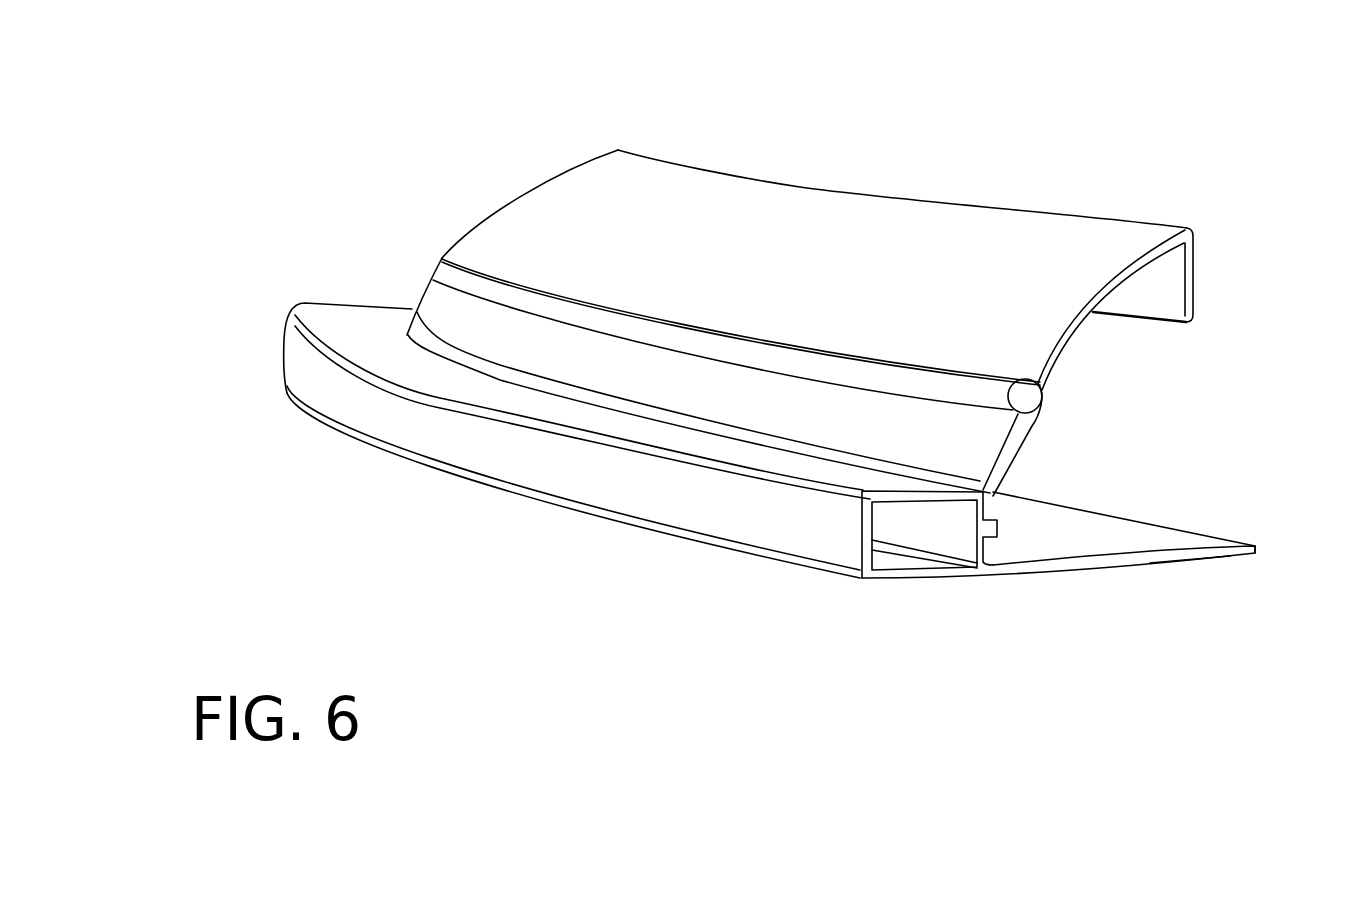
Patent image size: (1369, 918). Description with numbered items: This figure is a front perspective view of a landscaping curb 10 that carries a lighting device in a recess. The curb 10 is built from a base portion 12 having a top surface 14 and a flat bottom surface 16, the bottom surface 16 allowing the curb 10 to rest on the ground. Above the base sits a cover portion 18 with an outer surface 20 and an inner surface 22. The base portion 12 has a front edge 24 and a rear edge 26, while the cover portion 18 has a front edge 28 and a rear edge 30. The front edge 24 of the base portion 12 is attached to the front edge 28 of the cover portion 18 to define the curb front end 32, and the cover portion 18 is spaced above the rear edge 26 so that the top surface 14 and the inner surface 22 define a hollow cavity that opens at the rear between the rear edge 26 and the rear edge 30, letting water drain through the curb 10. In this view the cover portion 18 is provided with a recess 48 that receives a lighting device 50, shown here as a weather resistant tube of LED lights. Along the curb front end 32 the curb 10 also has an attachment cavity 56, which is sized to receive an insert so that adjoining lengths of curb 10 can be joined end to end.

The curb 10 is at (305, 220).
The base portion 12 is at (1123, 533).
The top surface 14 is at (1053, 537).
The bottom surface 16 is at (1183, 560).
The cover portion 18 is at (1022, 258).
The outer surface 20 is at (903, 222).
The inner surface 22 is at (1152, 295).
The front edge 24 is at (880, 578).
The rear edge 26 is at (1217, 530).
The front edge 28 is at (713, 522).
The rear edge 30 is at (1172, 302).
The curb front end 32 is at (800, 567).
The recess 48 is at (1040, 407).
The lighting device 50 is at (495, 290).
The attachment cavity 56 is at (920, 540).